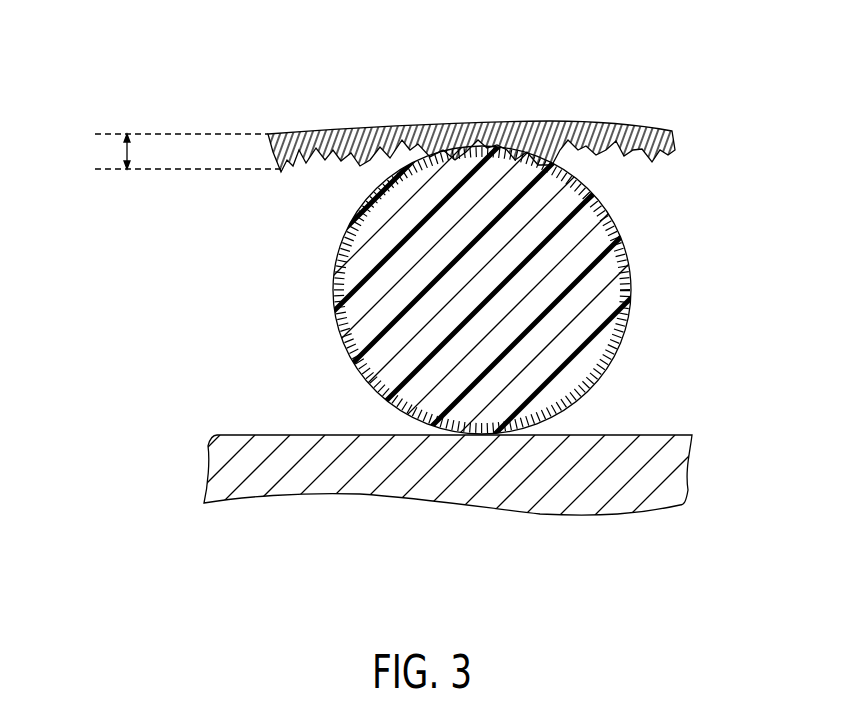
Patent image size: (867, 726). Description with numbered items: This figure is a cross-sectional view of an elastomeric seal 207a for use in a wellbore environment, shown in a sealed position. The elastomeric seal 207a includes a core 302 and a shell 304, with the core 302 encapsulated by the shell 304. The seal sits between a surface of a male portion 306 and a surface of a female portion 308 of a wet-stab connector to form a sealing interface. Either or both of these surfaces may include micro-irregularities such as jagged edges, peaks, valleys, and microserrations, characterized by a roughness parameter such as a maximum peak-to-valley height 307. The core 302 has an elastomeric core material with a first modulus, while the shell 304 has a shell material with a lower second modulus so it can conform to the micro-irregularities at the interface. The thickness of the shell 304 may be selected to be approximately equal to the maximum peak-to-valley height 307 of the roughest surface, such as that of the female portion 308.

The elastomeric seal 207a is at (702, 253).
The core 302 is at (395, 345).
The shell 304 is at (336, 326).
The male portion 306 is at (597, 137).
The maximum peak-to-valley height 307 is at (125, 150).
The female portion 308 is at (606, 499).